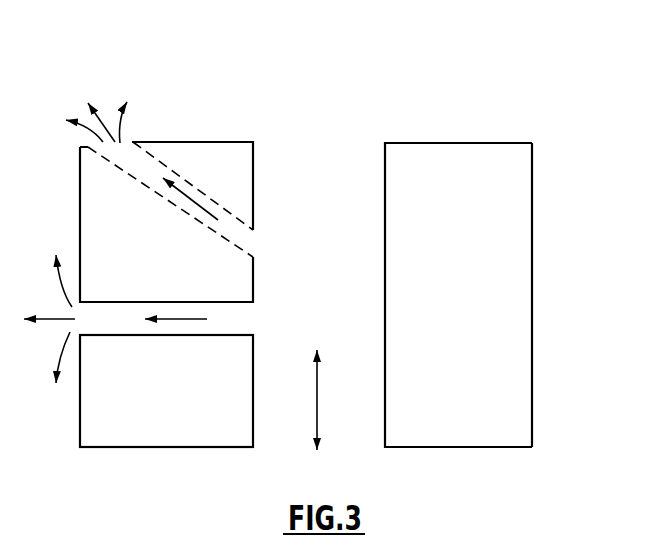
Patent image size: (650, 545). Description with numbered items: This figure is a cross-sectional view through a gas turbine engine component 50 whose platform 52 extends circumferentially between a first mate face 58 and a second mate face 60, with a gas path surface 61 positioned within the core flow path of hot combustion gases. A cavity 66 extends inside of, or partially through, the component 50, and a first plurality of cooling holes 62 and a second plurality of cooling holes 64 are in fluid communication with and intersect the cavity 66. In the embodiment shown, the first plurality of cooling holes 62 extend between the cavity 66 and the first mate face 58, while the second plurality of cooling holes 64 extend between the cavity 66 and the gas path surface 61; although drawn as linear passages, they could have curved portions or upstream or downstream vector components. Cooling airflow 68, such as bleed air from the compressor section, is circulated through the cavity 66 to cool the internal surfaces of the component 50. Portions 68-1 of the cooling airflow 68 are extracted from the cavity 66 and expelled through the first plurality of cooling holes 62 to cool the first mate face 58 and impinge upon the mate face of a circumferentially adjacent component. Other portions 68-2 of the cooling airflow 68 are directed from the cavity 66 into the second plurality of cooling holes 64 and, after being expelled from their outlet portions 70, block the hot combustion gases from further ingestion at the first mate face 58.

The component 50 is at (310, 100).
The platform 52 is at (427, 140).
The first mate face 58 is at (87, 422).
The second mate face 60 is at (533, 312).
The gas path surface 61 is at (197, 141).
The first plurality of cooling holes 62 is at (107, 338).
The second plurality of cooling holes 64 is at (118, 168).
The cavity 66 is at (331, 264).
The cooling airflow 68 is at (317, 415).
The portions of the cooling airflow 68-1 is at (173, 320).
The other portions of the cooling airflow 68-2 is at (192, 203).
The outlet portions 70 is at (133, 141).